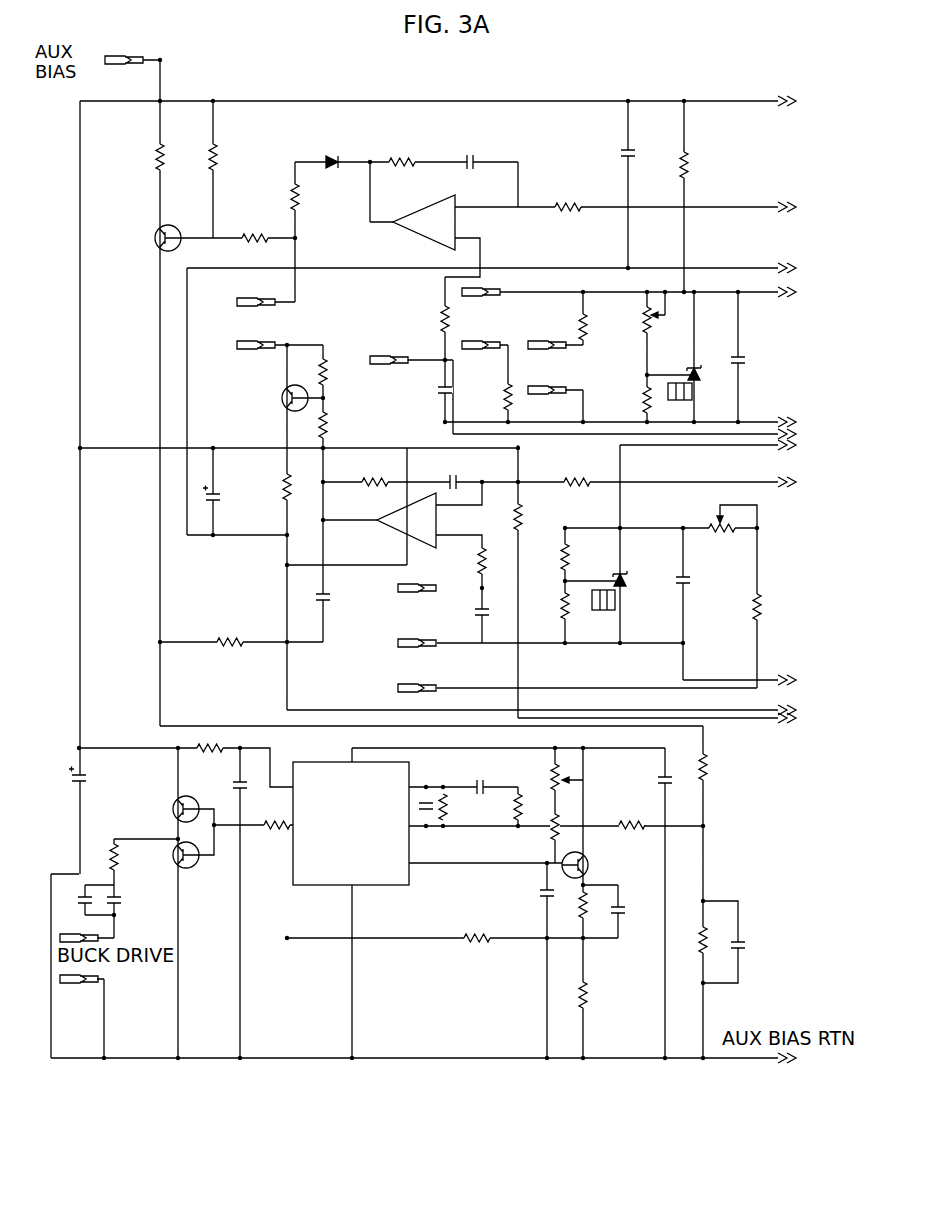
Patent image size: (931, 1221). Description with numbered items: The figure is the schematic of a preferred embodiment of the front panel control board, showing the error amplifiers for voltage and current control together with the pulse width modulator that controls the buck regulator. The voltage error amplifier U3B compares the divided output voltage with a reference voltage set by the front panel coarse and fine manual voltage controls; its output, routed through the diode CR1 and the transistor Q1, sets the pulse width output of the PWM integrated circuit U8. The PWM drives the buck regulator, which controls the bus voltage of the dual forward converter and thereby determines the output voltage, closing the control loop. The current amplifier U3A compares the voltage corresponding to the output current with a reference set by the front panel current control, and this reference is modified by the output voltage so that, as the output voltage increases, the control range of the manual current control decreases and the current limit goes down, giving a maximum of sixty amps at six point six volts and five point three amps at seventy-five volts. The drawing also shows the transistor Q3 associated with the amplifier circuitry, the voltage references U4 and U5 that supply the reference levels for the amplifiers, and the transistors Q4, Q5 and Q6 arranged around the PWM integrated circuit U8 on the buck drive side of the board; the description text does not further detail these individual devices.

The transistor Q1 is at (148, 238).
The diode CR1 is at (338, 149).
The voltage error amplifier U3B is at (416, 215).
The transistor Q3 is at (273, 398).
The voltage reference U4 is at (701, 377).
The current amplifier U3A is at (431, 520).
The voltage reference U5 is at (629, 596).
The PWM integrated circuit U8 is at (351, 807).
The transistor Q4 is at (168, 809).
The transistor Q5 is at (168, 855).
The transistor Q6 is at (592, 865).